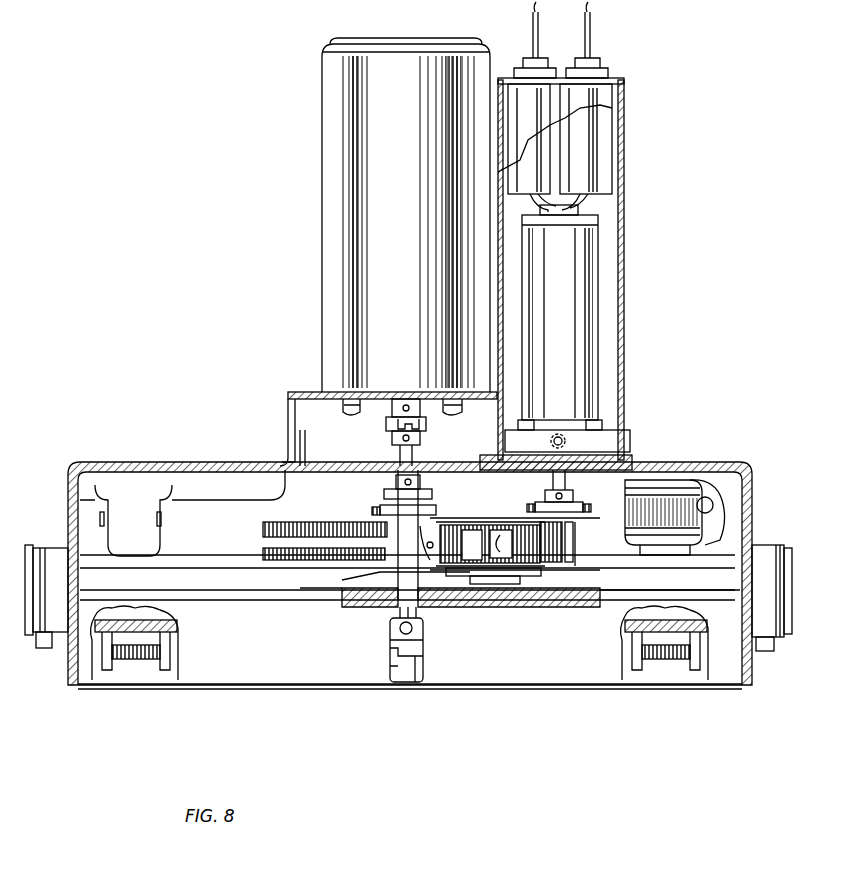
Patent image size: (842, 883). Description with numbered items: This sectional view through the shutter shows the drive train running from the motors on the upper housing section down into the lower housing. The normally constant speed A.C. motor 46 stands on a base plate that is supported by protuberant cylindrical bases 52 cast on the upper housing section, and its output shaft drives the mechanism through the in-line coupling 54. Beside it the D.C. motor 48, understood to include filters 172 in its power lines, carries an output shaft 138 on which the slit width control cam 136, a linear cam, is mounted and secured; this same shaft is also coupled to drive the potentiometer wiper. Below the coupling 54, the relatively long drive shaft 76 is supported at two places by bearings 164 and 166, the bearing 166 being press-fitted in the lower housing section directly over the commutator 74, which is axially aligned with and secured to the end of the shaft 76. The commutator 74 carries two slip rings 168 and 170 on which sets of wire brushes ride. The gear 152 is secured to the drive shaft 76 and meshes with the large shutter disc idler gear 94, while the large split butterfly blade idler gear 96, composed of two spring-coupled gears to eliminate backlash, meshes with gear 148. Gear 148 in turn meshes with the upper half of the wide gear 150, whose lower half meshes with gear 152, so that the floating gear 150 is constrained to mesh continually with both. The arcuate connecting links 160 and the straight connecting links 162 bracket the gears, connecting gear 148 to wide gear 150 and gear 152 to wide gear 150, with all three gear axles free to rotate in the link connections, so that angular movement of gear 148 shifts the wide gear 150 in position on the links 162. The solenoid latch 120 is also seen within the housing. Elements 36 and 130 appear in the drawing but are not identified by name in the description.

The mounting bracket 36 is at (128, 665).
The A.C. motor 46 is at (324, 105).
The D.C. motor 48 is at (586, 231).
The protuberant cylindrical bases 52 is at (345, 488).
The in-line coupling 54 is at (384, 426).
The commutator 74 is at (390, 652).
The drive shaft 76 is at (397, 613).
The shutter disc idler gear 94 is at (260, 526).
The butterfly blade idler gear 96 is at (270, 546).
The solenoid latch 120 is at (676, 545).
The collar 130 is at (366, 496).
The slit width control cam 136 is at (570, 500).
The output shaft 138 is at (618, 427).
The gear 148 is at (568, 578).
The wide gear 150 is at (495, 570).
The gear 152 is at (345, 605).
The arcuate connecting links 160 is at (560, 520).
The straight connecting links 162 is at (444, 582).
The bearing 164 is at (376, 456).
The bearing 166 is at (408, 634).
The slip ring 168 is at (423, 648).
The slip ring 170 is at (421, 668).
The filters 172 is at (558, 150).